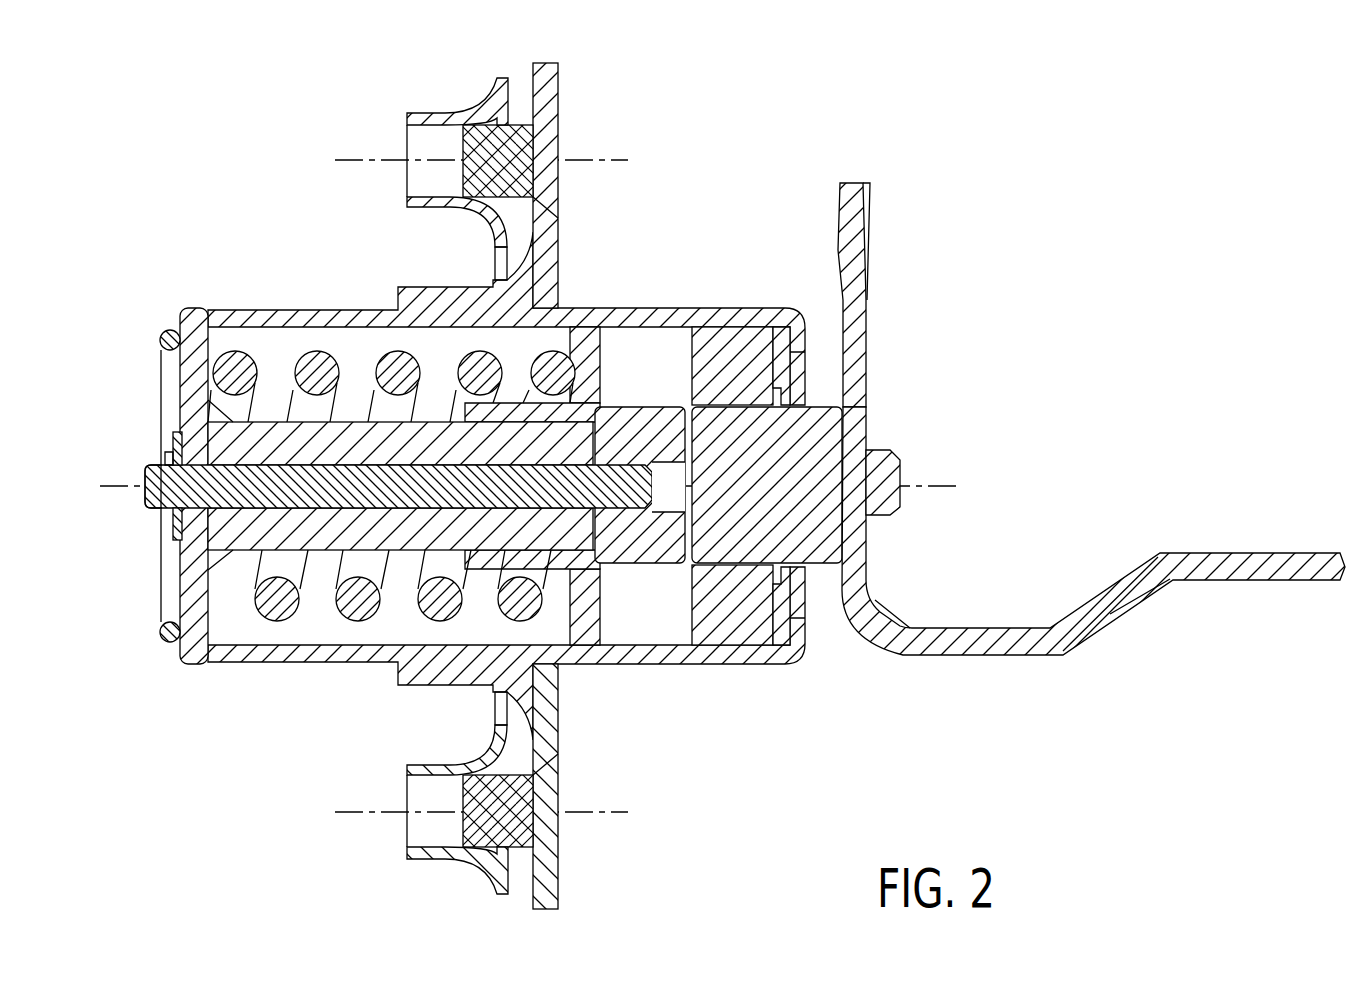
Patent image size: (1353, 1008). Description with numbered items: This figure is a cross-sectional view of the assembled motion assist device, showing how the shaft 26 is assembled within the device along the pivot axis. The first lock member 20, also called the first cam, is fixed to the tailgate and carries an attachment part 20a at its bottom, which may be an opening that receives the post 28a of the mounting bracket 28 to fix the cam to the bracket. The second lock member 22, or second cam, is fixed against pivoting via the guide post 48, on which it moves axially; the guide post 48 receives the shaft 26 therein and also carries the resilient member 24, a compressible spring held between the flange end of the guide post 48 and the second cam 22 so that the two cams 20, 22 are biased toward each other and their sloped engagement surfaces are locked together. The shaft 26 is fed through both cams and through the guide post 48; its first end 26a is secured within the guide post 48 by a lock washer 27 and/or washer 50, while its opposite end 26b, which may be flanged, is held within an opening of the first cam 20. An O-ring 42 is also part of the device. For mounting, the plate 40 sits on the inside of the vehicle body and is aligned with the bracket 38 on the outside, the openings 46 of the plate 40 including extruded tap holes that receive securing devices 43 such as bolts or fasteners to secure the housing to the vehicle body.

The first lock member 20 is at (745, 625).
The attachment part 20a is at (780, 562).
The second lock member 22 is at (585, 340).
The resilient member 24 is at (232, 368).
The shaft 26 is at (542, 455).
The first end 26a is at (158, 490).
The opposite end 26b is at (640, 477).
The lock washer 27 is at (172, 446).
The mounting bracket 28 is at (1000, 640).
The post 28a is at (832, 403).
The bracket 38 is at (550, 75).
The plate 40 is at (492, 267).
The O-ring 42 is at (170, 643).
The securing device 43 is at (548, 128).
The openings 46 is at (437, 115).
The guide post 48 is at (268, 418).
The washer 50 is at (175, 525).